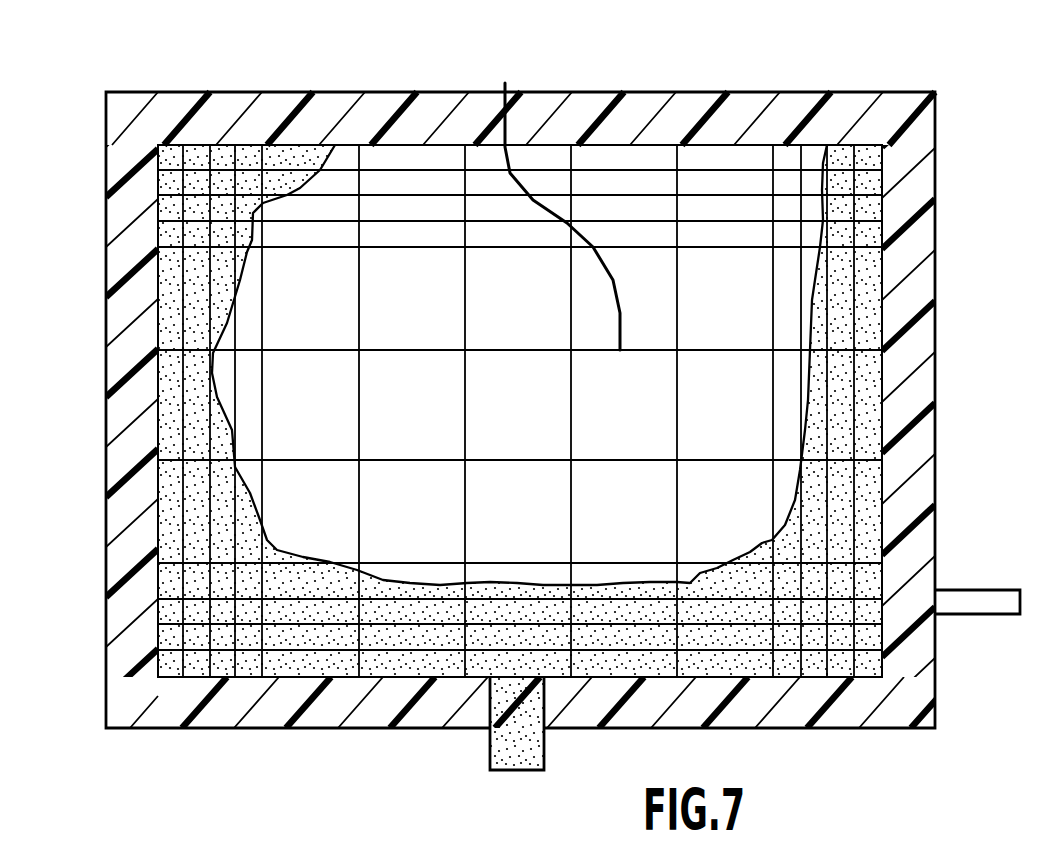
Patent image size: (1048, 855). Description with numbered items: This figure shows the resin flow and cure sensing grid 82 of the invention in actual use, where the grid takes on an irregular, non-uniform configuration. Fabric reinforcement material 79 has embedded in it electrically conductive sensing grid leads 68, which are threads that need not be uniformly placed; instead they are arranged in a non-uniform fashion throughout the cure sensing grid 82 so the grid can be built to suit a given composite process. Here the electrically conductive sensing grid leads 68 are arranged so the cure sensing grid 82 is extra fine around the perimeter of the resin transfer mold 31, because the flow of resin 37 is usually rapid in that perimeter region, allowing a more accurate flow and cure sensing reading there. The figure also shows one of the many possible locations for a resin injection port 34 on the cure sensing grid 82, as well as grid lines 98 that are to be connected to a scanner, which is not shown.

The resin transfer mold 31 is at (172, 92).
The resin flow and cure sensing grid 82 is at (723, 64).
The fabric reinforcement material 79 is at (725, 267).
The resin 37 is at (235, 283).
The electrically conductive sensing grid leads 68 is at (438, 222).
The resin injection port 34 is at (488, 757).
The grid lines 98 is at (1016, 616).